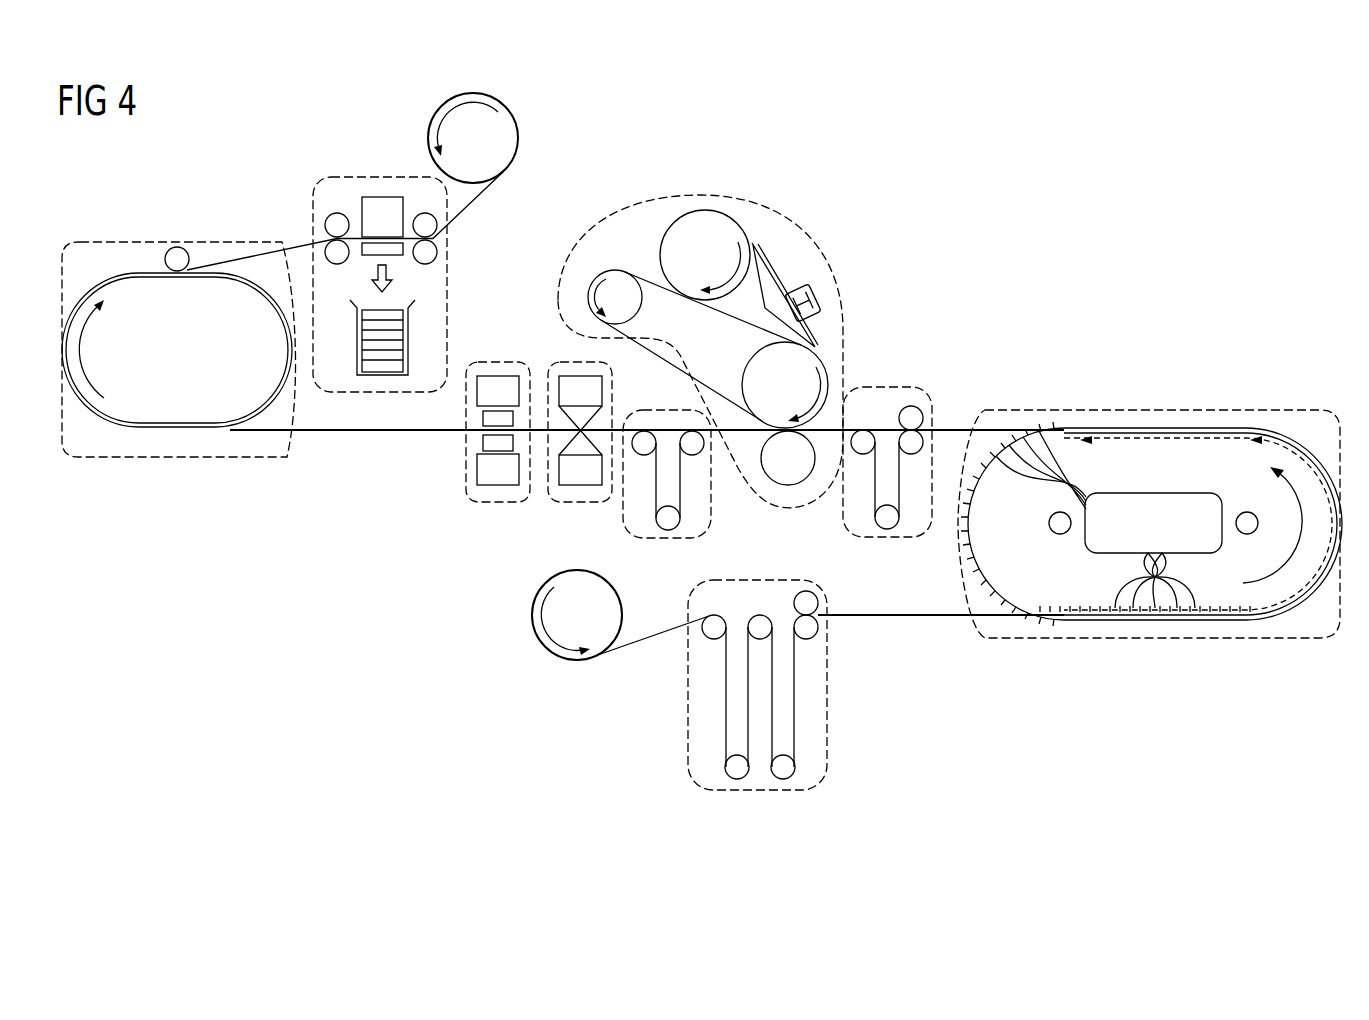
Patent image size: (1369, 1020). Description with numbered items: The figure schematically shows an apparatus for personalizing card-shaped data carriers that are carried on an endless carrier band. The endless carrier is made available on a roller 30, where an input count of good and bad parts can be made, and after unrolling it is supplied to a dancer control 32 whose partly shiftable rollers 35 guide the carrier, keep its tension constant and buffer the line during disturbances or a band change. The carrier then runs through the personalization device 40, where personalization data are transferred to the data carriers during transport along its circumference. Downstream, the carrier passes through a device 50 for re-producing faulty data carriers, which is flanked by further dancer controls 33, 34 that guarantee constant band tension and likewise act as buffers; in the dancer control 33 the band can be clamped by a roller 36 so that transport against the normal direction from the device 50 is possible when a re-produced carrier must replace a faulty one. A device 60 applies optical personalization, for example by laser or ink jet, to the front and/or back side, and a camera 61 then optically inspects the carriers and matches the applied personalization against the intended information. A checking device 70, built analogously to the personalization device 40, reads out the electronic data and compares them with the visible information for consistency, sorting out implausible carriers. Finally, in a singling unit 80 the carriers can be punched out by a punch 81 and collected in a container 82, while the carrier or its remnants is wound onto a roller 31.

The checking device 70 is at (135, 241).
The singling unit 80 is at (332, 177).
The punch 81 is at (380, 197).
The container 82 is at (387, 376).
The roller 31 is at (431, 122).
The device for re-producing faulty data carriers 50 is at (812, 230).
The camera 61 is at (493, 362).
The device for optical personalization 60 is at (575, 362).
The dancer control 34 is at (711, 510).
The dancer control 33 is at (887, 386).
The roller 36 is at (919, 410).
The roller 30 is at (530, 618).
The dancer control 32 is at (688, 700).
The rollers 35 is at (790, 772).
The personalization device 40 is at (1070, 638).